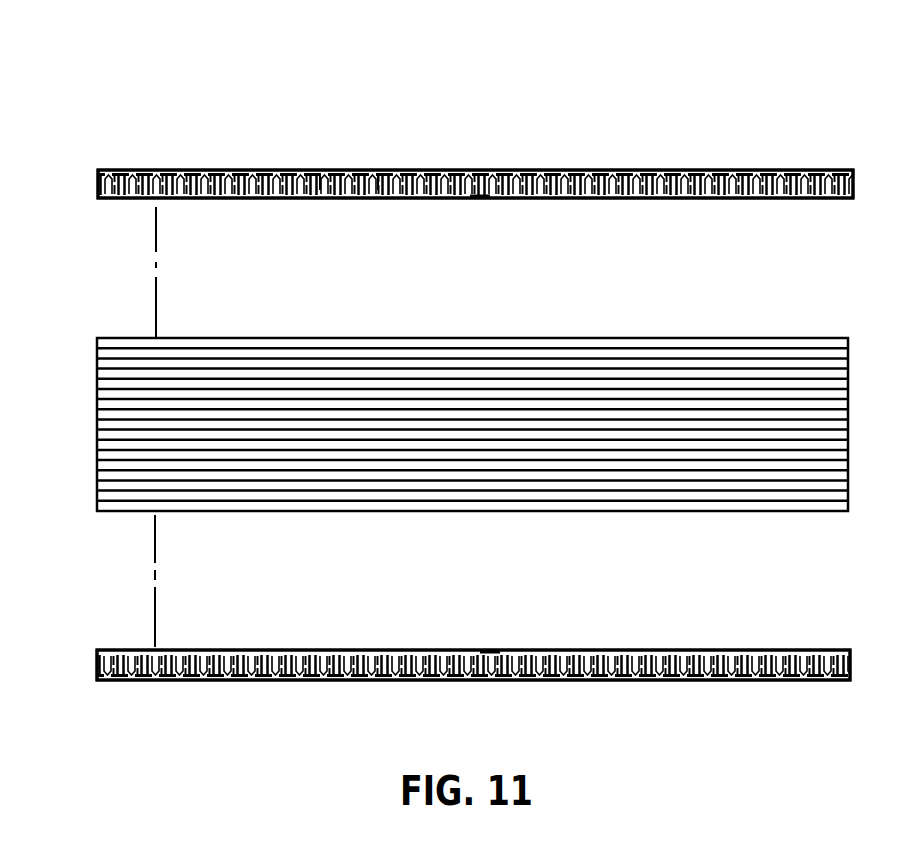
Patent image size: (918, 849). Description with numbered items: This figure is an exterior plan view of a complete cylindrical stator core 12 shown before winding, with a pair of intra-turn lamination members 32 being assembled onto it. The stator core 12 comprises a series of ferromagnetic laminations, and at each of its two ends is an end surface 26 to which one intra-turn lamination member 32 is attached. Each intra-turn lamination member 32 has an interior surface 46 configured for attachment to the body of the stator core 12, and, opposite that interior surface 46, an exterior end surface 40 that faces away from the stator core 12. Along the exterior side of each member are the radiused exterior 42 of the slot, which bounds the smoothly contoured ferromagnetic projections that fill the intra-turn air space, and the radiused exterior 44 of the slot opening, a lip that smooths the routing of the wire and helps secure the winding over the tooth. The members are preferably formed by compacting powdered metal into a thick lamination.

The stator core 12 is at (68, 372).
The end surface 26 is at (657, 338).
The intra-turn lamination member 32 is at (195, 138).
The exterior end surface 40 is at (575, 170).
The radiused exterior of slot 42 is at (377, 166).
The radiused exterior of slot opening 44 is at (327, 166).
The interior surface 46 is at (473, 200).